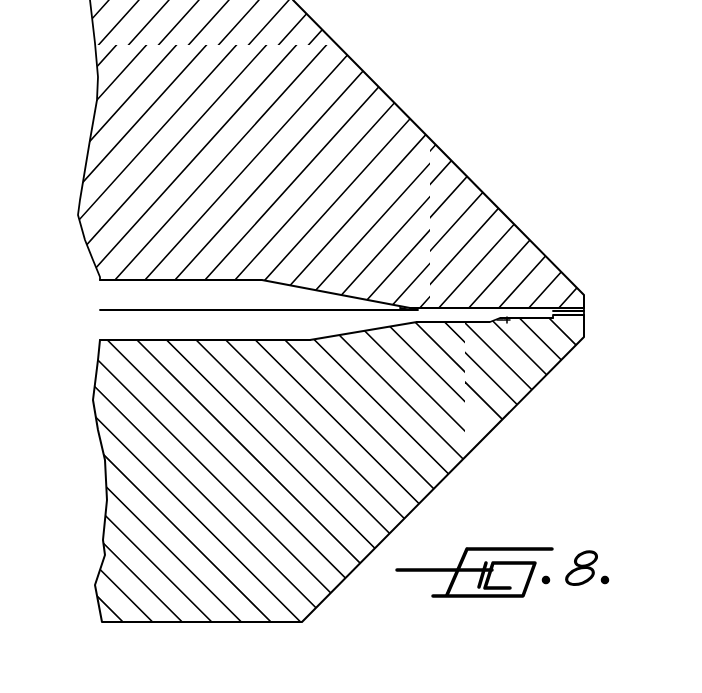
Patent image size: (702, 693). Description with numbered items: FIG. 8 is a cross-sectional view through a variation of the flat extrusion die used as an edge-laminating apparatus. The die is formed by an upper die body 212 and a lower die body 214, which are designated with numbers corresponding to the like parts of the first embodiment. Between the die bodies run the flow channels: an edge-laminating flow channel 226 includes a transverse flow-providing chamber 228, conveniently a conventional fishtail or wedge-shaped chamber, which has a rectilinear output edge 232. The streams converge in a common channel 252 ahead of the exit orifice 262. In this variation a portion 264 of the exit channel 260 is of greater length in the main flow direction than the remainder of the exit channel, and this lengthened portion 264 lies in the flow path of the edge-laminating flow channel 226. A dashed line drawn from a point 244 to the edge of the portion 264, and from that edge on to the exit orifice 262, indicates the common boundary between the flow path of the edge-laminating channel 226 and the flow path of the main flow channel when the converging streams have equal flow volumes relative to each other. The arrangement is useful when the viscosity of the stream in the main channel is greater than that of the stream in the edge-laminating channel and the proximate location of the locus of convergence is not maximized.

The upper die body 212 is at (340, 47).
The lower die body 214 is at (480, 435).
The edge-laminating flow channel 226 is at (206, 304).
The transverse flow-providing chamber 228 is at (326, 320).
The output edge 232 is at (407, 318).
The point 244 is at (410, 310).
The common channel 252 is at (463, 320).
The exit channel 260 is at (547, 308).
The exit orifice 262 is at (586, 309).
The portion of exit channel 264 is at (513, 322).